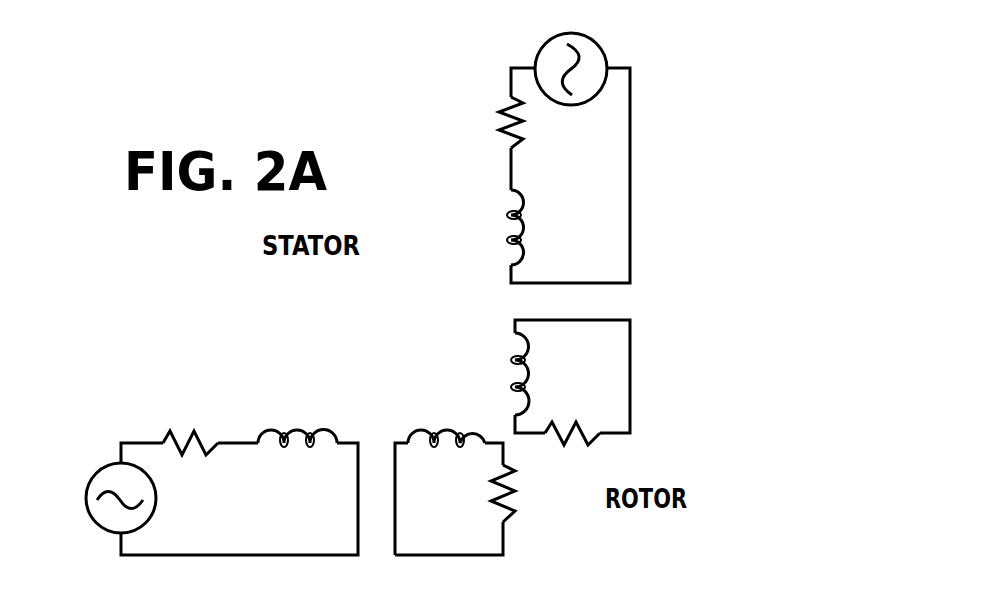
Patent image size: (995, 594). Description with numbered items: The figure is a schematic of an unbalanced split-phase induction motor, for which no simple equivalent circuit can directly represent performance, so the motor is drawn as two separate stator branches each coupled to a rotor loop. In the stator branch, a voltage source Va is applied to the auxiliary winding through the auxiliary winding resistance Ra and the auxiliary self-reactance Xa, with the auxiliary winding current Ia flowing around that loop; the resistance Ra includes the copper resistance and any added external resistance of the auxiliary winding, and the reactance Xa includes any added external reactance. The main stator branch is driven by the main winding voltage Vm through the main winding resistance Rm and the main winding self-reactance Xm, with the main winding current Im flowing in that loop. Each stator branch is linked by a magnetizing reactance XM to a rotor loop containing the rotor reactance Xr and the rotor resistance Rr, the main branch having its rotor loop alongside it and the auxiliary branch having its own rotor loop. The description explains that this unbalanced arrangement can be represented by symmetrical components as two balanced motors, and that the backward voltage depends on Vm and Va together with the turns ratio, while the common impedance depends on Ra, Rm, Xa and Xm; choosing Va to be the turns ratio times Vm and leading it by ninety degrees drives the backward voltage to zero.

The auxiliary winding voltage Va is at (571, 52).
The auxiliary winding resistance Ra is at (487, 122).
The auxiliary winding self-reactance Xa is at (487, 227).
The auxiliary winding current Ia is at (548, 218).
The magnetizing reactance XM is at (399, 440).
The rotor reactance Xr is at (468, 390).
The rotor resistance Rr is at (545, 472).
The main winding voltage Vm is at (91, 498).
The main winding resistance Rm is at (190, 427).
The main winding self-reactance Xm is at (297, 422).
The main winding current Im is at (305, 486).